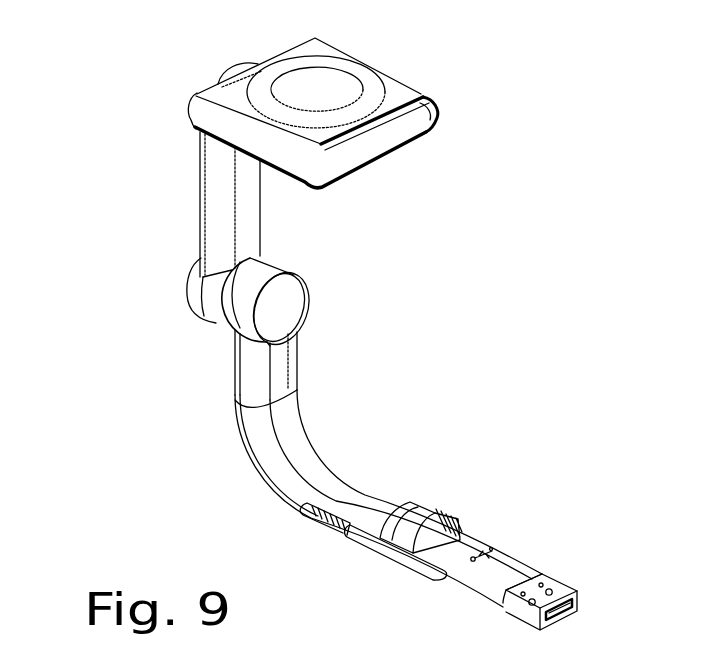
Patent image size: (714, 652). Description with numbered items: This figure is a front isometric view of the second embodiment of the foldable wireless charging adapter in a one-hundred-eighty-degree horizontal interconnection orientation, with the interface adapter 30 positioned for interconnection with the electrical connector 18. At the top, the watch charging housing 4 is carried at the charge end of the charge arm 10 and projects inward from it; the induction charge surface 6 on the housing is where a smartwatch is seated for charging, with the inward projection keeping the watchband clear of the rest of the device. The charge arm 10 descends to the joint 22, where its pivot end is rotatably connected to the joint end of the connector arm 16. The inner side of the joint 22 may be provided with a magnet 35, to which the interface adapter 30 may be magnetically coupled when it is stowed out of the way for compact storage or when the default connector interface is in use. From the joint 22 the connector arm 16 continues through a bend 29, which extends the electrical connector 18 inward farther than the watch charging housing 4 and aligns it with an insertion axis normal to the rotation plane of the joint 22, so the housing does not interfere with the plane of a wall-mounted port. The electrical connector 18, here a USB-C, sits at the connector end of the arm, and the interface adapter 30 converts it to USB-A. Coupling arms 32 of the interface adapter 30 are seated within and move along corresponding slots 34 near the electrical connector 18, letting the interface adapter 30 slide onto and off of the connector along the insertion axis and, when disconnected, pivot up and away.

The watch charging housing 4 is at (420, 137).
The induction charge surface 6 is at (318, 93).
The charge arm 10 is at (202, 192).
The joint 22 is at (188, 295).
The magnet 35 is at (283, 311).
The connector arm 16 is at (291, 468).
The bend 29 is at (250, 460).
The electrical connector 18 is at (433, 513).
The slots 34 is at (308, 515).
The coupling arms 32 is at (380, 550).
The interface adapter 30 is at (490, 550).